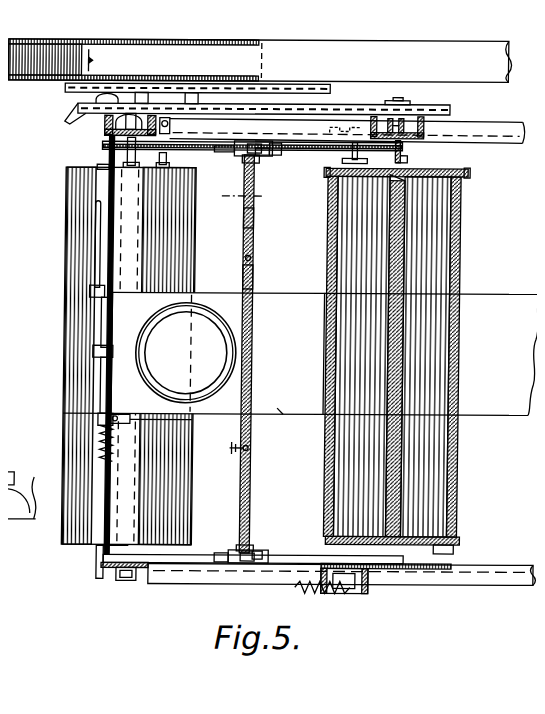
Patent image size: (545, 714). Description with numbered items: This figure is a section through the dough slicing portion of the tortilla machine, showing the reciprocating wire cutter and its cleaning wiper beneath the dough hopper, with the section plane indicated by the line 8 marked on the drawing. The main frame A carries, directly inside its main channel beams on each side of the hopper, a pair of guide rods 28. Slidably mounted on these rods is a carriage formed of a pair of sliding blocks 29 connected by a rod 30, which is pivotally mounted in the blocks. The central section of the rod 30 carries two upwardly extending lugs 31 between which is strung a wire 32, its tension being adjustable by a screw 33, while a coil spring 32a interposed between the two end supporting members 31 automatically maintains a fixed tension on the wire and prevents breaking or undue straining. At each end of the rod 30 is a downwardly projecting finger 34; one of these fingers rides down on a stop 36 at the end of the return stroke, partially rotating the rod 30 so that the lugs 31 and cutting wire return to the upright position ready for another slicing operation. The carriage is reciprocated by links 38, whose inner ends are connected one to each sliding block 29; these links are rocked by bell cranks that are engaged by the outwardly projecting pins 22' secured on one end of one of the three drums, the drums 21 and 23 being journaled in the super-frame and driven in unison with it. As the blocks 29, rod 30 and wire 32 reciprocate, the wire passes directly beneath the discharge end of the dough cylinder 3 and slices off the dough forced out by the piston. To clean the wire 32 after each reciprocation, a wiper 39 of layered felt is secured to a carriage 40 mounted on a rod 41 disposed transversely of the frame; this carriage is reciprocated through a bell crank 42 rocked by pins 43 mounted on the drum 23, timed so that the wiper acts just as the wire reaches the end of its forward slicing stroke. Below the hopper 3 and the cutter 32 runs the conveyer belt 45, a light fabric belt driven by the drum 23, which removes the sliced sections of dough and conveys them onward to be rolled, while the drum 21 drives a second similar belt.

The cylinder 3 is at (197, 300).
The axis line 8 is at (242, 188).
The drum 21 is at (451, 478).
The outwardly projecting pins 22' is at (467, 547).
The drum 23 is at (56, 183).
The guide rods 28 is at (230, 146).
The sliding blocks 29 is at (255, 149).
The rod 30 is at (245, 212).
The lugs 31 is at (243, 252).
The wire 32 is at (245, 352).
The coil spring 32a is at (246, 268).
The screw 33 is at (227, 442).
The finger 34 is at (235, 140).
The stop 36 is at (274, 139).
The links 38 is at (310, 149).
The wiper 39 is at (185, 412).
The carriage 40 is at (96, 386).
The rod 41 is at (99, 250).
The bell crank 42 is at (86, 218).
The pins 43 is at (90, 158).
The conveyer belt 45 is at (272, 404).
The main frame A is at (347, 129).